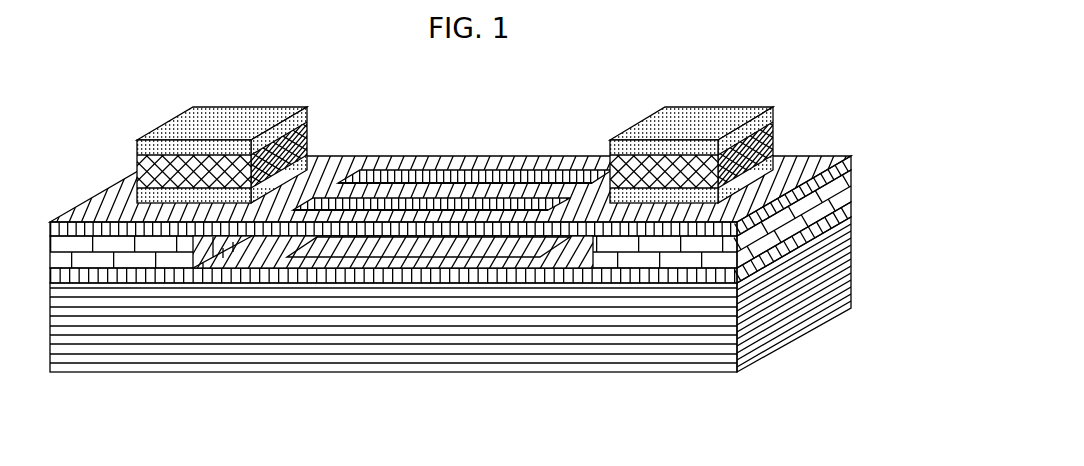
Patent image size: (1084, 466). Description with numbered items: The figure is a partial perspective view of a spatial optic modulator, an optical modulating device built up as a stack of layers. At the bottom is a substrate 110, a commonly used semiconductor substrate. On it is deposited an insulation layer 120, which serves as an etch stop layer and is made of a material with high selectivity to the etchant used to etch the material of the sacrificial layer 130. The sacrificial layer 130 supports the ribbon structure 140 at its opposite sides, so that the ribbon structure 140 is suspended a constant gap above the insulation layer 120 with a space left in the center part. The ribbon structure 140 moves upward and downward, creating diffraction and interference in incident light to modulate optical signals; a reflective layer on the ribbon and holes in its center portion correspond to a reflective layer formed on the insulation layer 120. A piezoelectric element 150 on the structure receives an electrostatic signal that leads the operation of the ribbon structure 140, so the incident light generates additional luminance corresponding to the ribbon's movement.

The substrate 110 is at (853, 275).
The insulation layer 120 is at (851, 215).
The sacrificial layer 130 is at (851, 187).
The ribbon structure 140 is at (853, 162).
The piezoelectric element 150 is at (777, 113).